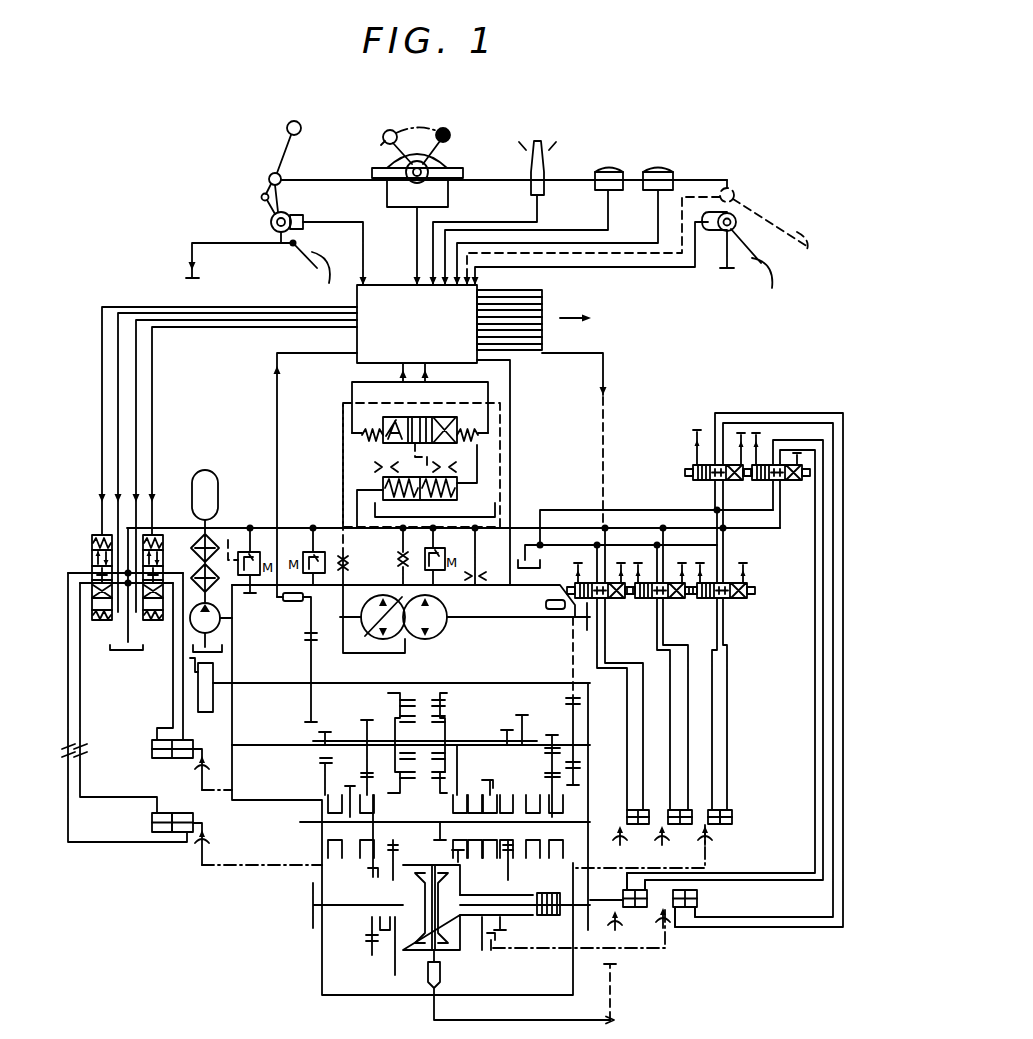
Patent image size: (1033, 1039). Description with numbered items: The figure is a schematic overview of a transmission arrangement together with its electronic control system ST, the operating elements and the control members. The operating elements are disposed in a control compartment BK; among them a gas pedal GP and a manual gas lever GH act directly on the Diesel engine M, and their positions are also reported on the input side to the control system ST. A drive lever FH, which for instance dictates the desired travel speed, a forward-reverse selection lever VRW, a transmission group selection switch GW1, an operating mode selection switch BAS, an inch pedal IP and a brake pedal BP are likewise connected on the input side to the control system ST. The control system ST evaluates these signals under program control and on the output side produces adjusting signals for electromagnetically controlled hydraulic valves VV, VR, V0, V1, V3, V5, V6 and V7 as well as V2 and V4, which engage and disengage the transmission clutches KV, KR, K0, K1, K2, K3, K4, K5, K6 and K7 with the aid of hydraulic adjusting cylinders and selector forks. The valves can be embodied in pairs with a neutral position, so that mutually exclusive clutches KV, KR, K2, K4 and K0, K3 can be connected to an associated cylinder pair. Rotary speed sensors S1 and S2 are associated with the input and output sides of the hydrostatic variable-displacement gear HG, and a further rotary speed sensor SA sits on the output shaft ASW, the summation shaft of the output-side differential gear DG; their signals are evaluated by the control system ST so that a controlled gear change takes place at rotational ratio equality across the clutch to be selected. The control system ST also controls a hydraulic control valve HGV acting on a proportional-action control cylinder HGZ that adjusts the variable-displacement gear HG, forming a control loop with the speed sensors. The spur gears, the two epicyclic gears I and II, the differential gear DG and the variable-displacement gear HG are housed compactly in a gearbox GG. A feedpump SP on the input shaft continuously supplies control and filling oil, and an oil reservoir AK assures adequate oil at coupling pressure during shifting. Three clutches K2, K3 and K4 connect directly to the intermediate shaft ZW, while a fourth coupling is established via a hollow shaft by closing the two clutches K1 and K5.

The manual gas lever GH is at (290, 121).
The control compartment BK is at (345, 179).
The drive lever FH is at (448, 140).
The forward-reverse selection lever VRW is at (537, 138).
The transmission group selection switch GW1 is at (610, 169).
The operating mode selection switch BAS is at (662, 169).
The inch pedal IP is at (759, 207).
The brake pedal BP is at (773, 264).
The gas pedal GP is at (317, 258).
The electronic control system ST is at (474, 324).
The hydraulic control valve HGV is at (478, 437).
The hydraulic control cylinder HGZ is at (457, 498).
The oil reservoir AK is at (211, 467).
The hydraulic valve V4 is at (92, 558).
The hydraulic valve V2 is at (100, 602).
The hydraulic valve VV is at (163, 557).
The hydraulic valve VR is at (162, 602).
The feedpump SP is at (223, 620).
The rotary speed sensor S1 is at (288, 602).
The rotary speed sensor S2 is at (547, 612).
The hydrostatic variable-displacement gear HG is at (413, 638).
The hydraulic valve V7 is at (706, 481).
The hydraulic valve V6 is at (766, 481).
The hydraulic valve V3 is at (717, 580).
The hydraulic valve V5 is at (604, 608).
The hydraulic valve V1 is at (664, 608).
The hydraulic valve V0 is at (744, 608).
The transmission clutch KV is at (150, 740).
The transmission clutch KR is at (183, 760).
The transmission clutch K2 is at (152, 816).
The transmission clutch K4 is at (193, 816).
The Diesel engine M is at (202, 699).
The gearbox GG is at (297, 800).
The second epicyclic gear II is at (388, 708).
The first epicyclic gear I is at (447, 701).
The transmission clutch K1 is at (680, 832).
The transmission clutch K5 is at (638, 832).
The transmission clutch K6 is at (624, 892).
The transmission clutch K7 is at (697, 899).
The transmission clutch K3 is at (714, 810).
The transmission clutch K0 is at (732, 826).
The intermediate shaft ZW is at (440, 816).
The output shaft ASW is at (414, 946).
The differential gear DG is at (448, 947).
The rotary speed sensor SA is at (428, 978).